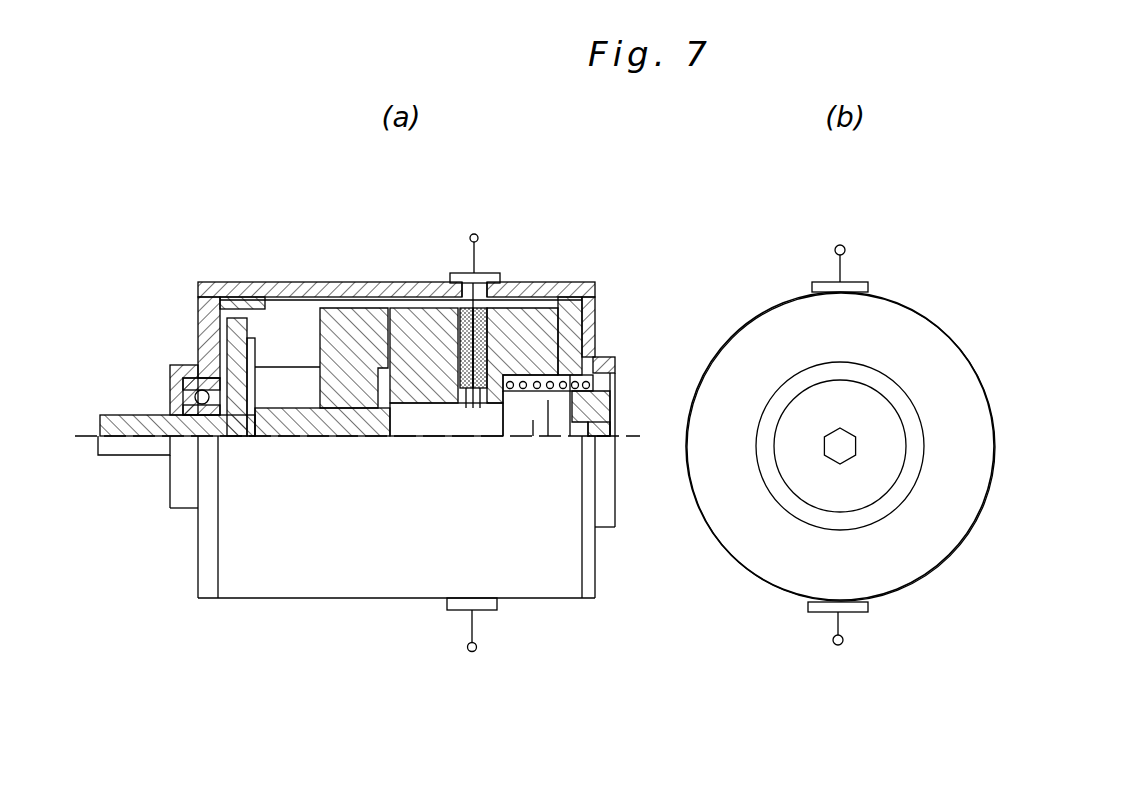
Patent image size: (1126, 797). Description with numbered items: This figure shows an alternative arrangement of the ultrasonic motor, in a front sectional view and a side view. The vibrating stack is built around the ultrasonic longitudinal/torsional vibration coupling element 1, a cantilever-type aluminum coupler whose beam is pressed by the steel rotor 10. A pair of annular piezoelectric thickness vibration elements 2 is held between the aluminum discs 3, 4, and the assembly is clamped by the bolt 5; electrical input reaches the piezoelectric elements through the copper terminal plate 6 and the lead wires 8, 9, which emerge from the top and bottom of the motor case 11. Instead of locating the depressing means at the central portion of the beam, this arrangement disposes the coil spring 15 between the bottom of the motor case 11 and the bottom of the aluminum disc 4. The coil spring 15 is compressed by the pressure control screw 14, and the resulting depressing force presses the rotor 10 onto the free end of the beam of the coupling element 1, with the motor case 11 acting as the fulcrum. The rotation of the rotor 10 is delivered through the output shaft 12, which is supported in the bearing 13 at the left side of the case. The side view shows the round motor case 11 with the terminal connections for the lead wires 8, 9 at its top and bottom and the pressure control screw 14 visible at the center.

The ultrasonic longitudinal/torsional vibration coupling element 1 is at (290, 380).
The piezoelectric thickness vibration elements 2 is at (465, 320).
The aluminum disc 3 is at (415, 322).
The aluminum disc 4 is at (535, 332).
The bolt 5 is at (533, 423).
The terminal plate 6 is at (463, 392).
The lead wire 8 is at (474, 234).
The lead wire 9 is at (474, 652).
The rotor 10 is at (250, 297).
The motor case 11 is at (228, 283).
The output shaft 12 is at (127, 415).
The bearing 13 is at (185, 367).
The pressure control screw 14 is at (597, 402).
The coil spring 15 is at (617, 367).